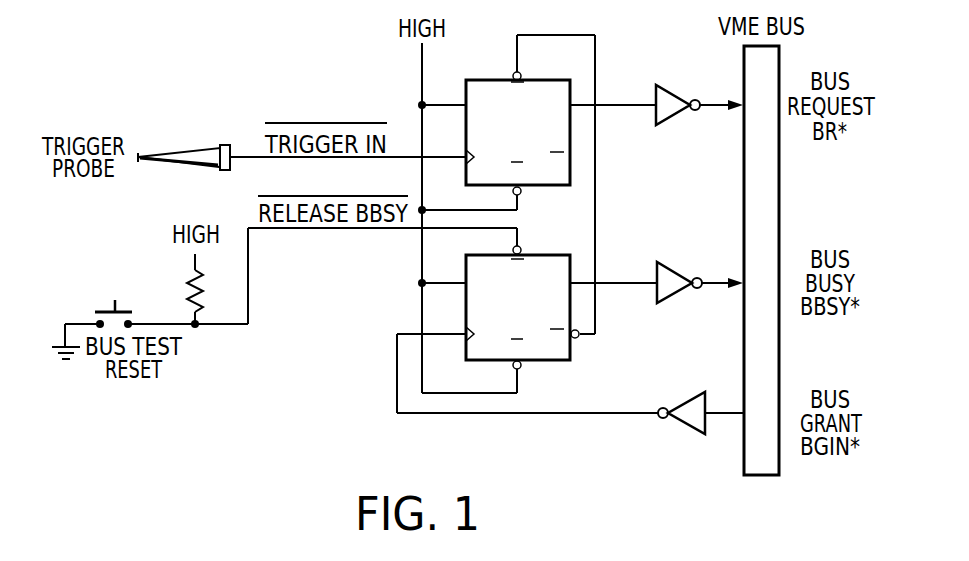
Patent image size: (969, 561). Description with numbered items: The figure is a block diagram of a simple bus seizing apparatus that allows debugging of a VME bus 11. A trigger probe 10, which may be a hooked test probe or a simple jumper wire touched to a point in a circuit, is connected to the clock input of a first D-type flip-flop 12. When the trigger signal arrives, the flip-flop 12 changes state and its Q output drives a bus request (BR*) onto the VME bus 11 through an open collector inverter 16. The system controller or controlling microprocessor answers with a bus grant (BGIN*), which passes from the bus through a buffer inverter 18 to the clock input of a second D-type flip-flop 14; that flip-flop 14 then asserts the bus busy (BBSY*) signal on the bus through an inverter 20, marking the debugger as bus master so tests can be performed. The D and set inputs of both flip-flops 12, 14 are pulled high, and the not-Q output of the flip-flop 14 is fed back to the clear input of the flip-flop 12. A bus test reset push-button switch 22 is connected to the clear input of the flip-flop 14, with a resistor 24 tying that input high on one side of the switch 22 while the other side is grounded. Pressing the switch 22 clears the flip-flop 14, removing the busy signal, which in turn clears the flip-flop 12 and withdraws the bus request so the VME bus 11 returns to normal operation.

The trigger probe 10 is at (186, 148).
The VME bus 11 is at (762, 476).
The first D-type flip-flop 12 is at (486, 80).
The second D-type flip-flop 14 is at (530, 321).
The inverter 16 is at (679, 118).
The buffer inverter 18 is at (683, 430).
The inverter 20 is at (680, 296).
The push-button switch 22 is at (100, 306).
The resistor 24 is at (188, 279).